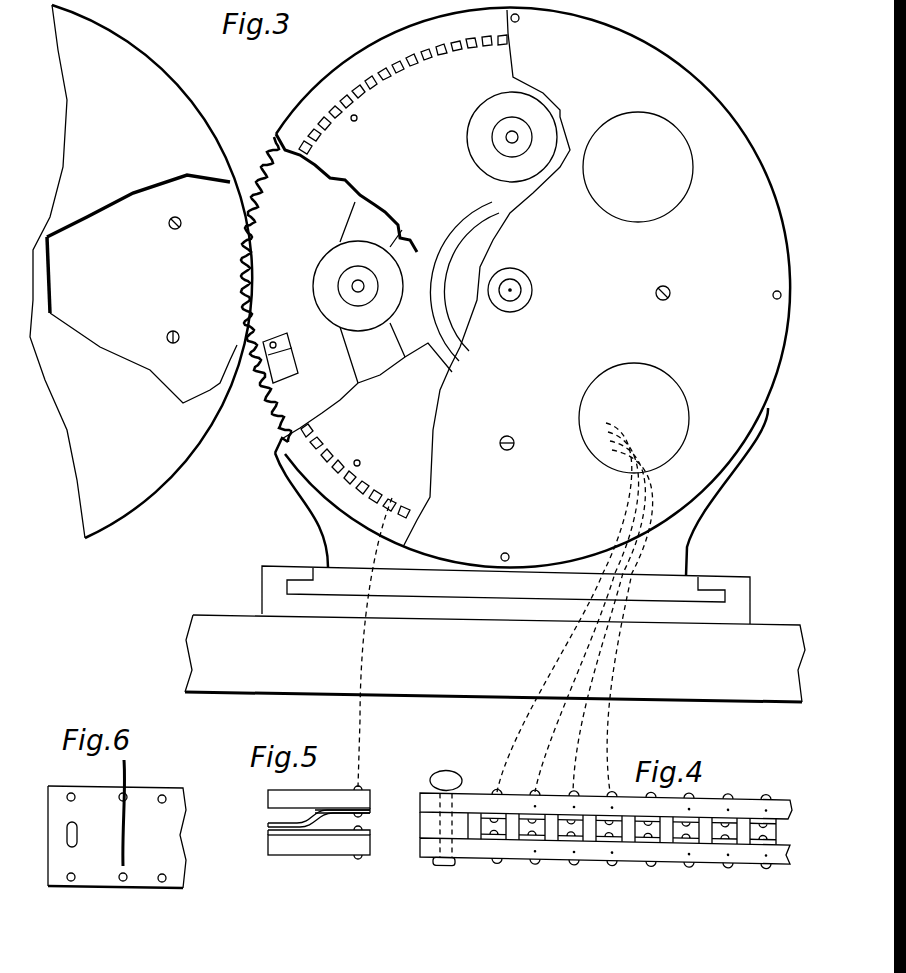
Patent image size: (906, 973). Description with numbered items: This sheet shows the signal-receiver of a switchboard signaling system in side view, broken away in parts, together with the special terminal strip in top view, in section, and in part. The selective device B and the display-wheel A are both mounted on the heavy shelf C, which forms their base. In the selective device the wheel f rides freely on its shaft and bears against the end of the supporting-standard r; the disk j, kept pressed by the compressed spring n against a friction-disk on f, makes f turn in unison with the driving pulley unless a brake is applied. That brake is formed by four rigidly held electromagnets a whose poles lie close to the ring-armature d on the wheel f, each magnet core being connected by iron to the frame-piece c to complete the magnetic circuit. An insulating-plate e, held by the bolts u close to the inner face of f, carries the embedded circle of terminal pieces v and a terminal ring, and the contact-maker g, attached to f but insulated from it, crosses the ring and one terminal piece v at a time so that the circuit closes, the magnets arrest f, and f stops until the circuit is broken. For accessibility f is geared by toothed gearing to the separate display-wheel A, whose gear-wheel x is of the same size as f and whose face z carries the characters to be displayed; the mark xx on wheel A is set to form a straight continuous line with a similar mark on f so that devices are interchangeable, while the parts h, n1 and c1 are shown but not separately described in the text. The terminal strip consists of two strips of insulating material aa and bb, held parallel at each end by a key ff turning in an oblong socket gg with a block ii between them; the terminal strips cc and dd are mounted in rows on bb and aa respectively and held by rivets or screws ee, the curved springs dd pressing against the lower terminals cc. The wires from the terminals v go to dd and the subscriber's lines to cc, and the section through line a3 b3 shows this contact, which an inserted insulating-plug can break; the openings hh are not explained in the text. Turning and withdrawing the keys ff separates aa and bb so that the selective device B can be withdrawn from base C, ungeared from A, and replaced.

In FIG. 3, the display-wheel A is at (141, 286).
In FIG. 3, the selective device B is at (533, 288).
In FIG. 3, the shelf C is at (495, 634).
In FIG. 3, the electromagnets a is at (435, 212).
In FIG. 3, the frame-piece c is at (634, 398).
In FIG. 3, the standard c' c1 is at (521, 492).
In FIG. 3, the ring-armature d is at (372, 292).
In FIG. 3, the insulating-plate e is at (412, 132).
In FIG. 3, the wheel f is at (269, 289).
In FIG. 3, the contact-maker g is at (291, 388).
In FIG. 3, the toothed segment h is at (270, 434).
In FIG. 3, the disk j is at (481, 281).
In FIG. 3, the spring n is at (292, 350).
In FIG. 3, the screw n' n1 is at (223, 362).
In FIG. 3, the supporting-standard r is at (403, 94).
In FIG. 3, the bolts u is at (641, 285).
In FIG. 3, the terminal pieces v is at (355, 471).
In FIG. 3, the gear-wheel x is at (142, 289).
In FIG. 3, the line xx is at (233, 182).
In FIG. 3, the display-wheel face z is at (140, 466).
In FIG. 4, the insulating strip aa is at (422, 793).
In FIG. 5, the insulating strip aa is at (268, 790).
In FIG. 6, the insulating strip aa is at (117, 824).
In FIG. 4, the insulating strip bb is at (420, 858).
In FIG. 5, the insulating strip bb is at (300, 857).
In FIG. 4, the terminal strips cc is at (491, 836).
In FIG. 5, the terminal strips cc is at (268, 833).
In FIG. 4, the terminal springs dd is at (493, 816).
In FIG. 5, the terminal springs dd is at (268, 825).
In FIG. 4, the rivets or screws ee is at (538, 859).
In FIG. 6, the rivets or screws ee is at (161, 883).
In FIG. 4, the key ff is at (449, 770).
In FIG. 6, the oblong socket gg is at (72, 848).
In FIG. 6, the holes hh is at (67, 792).
In FIG. 4, the block ii is at (420, 824).
In FIG. 4, the section line point a3 is at (553, 836).
In FIG. 4, the section line point b3 is at (553, 836).